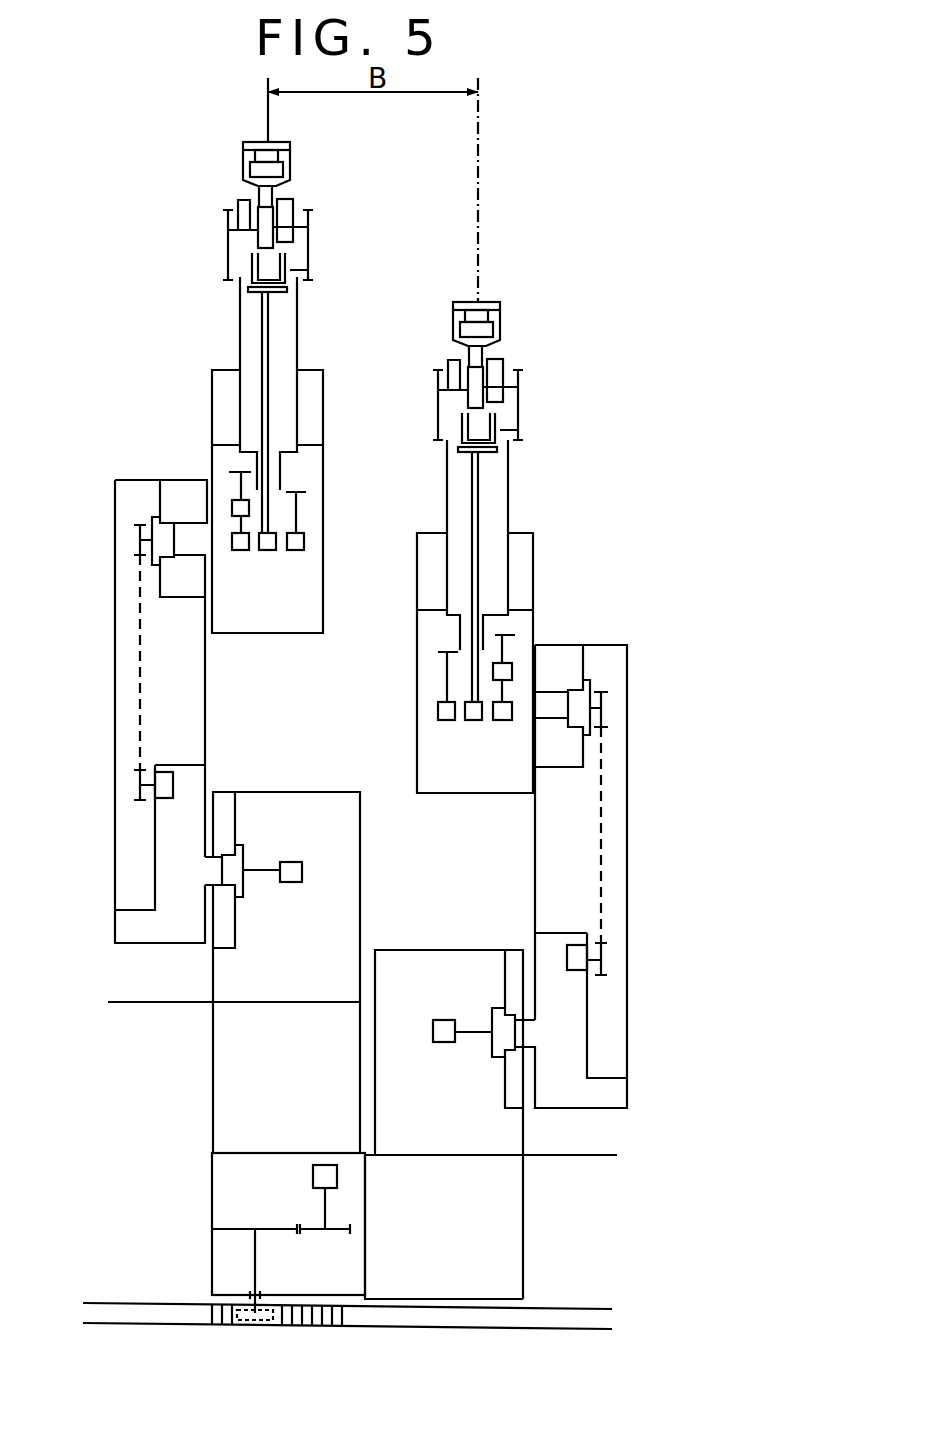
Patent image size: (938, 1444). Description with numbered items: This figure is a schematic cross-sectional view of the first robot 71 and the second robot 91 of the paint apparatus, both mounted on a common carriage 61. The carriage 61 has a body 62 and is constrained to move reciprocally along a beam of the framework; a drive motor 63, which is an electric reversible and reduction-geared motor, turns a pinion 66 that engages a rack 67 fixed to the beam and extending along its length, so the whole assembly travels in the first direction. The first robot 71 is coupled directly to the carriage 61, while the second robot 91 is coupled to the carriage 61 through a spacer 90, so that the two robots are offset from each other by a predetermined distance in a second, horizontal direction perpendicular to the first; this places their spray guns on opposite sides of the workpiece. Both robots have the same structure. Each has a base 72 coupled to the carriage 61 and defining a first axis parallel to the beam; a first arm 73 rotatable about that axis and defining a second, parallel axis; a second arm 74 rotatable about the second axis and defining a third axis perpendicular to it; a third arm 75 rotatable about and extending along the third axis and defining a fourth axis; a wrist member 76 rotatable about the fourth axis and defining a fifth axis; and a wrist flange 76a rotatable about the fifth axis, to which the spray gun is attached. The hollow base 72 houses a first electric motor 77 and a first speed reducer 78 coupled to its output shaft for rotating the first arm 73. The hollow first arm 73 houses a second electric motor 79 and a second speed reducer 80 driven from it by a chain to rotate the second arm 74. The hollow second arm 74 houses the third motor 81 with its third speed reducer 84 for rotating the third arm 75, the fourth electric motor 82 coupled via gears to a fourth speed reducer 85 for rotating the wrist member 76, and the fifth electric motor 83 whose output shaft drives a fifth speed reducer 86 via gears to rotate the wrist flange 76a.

The carriage 61 is at (209, 1240).
The body 62 is at (523, 1217).
The drive motor 63 is at (313, 1172).
The pinion 66 is at (240, 1305).
The rack 67 is at (157, 1313).
The first robot 71 is at (631, 706).
The base 72 is at (360, 918).
The first arm 73 is at (115, 722).
The second arm 74 is at (323, 420).
The third arm 75 is at (297, 335).
The wrist member 76 is at (292, 167).
The wrist flange 76a is at (285, 140).
The first electric motor 77 is at (302, 870).
The first speed reducer 78 is at (247, 850).
The second electric motor 79 is at (173, 783).
The second speed reducer 80 is at (155, 520).
The third motor 81 is at (303, 543).
The fourth electric motor 82 is at (243, 552).
The fifth electric motor 83 is at (273, 553).
The third speed reducer 84 is at (238, 500).
The fourth speed reducer 85 is at (283, 232).
The fifth speed reducer 86 is at (262, 170).
The spacer 90 is at (245, 1058).
The second robot 91 is at (111, 578).